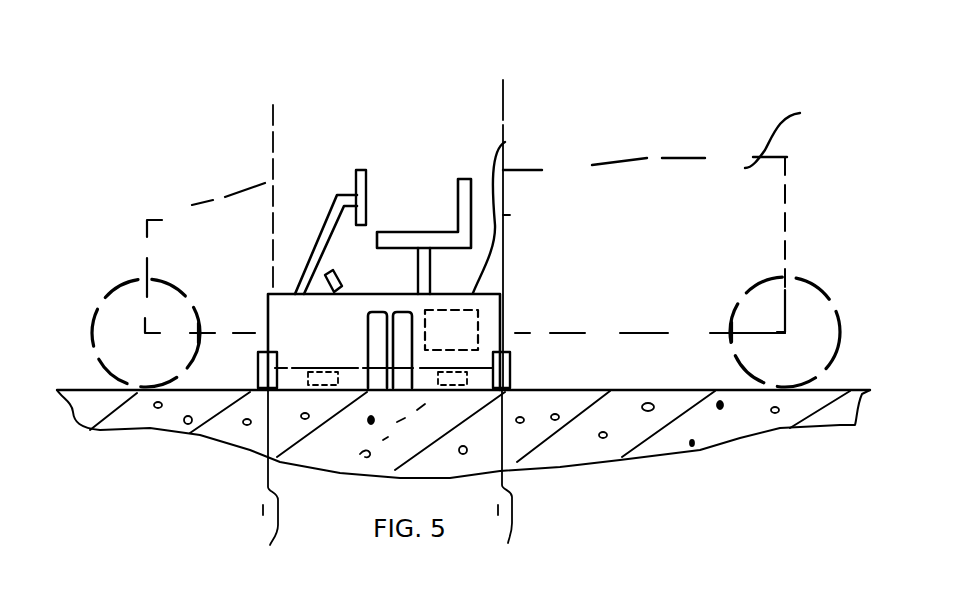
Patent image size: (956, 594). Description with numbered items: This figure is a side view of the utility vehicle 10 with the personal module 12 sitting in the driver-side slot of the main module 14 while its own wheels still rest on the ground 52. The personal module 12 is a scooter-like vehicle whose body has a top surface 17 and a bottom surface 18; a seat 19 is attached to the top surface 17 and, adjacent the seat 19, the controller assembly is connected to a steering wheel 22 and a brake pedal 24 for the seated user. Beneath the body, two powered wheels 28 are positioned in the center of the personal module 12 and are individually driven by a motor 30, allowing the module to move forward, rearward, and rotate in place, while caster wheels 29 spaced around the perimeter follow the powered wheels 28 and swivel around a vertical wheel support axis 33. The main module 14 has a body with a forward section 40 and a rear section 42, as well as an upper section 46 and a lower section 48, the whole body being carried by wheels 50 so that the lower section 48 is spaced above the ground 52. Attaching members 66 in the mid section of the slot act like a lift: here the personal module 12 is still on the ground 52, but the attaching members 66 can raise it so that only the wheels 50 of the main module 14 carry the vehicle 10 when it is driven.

The utility vehicle 10 is at (97, 134).
The personal module 12 is at (285, 293).
The main module 14 is at (647, 158).
The top surface 17 is at (505, 130).
The bottom surface 18 is at (500, 393).
The seat 19 is at (413, 232).
The steering wheel 22 is at (367, 167).
The brake pedal 24 is at (334, 290).
The powered wheels 28 is at (403, 310).
The caster wheels 29 is at (510, 366).
The motor 30 is at (503, 298).
The vertical wheel support axis 33 is at (276, 129).
The forward section 40 is at (217, 237).
The rear section 42 is at (791, 127).
The upper section 46 is at (542, 162).
The lower section 48 is at (662, 333).
The wheels 50 is at (90, 318).
The ground 52 is at (723, 437).
The attaching members 66 is at (323, 396).